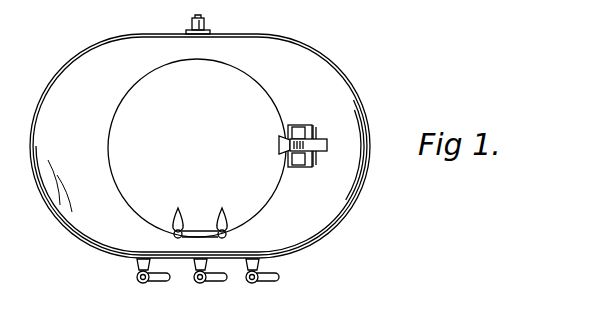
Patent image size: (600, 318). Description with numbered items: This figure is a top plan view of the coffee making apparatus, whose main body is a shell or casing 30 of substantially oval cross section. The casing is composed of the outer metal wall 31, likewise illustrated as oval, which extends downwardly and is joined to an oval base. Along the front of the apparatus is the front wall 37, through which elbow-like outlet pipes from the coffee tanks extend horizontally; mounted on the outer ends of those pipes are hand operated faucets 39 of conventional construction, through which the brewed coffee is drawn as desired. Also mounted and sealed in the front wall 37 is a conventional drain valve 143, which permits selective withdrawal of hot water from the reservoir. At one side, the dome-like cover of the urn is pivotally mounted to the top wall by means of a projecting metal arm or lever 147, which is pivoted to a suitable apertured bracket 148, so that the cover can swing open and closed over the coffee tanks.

The shell or casing 30 is at (222, 146).
The outer metal wall 31 is at (200, 146).
The front wall 37 is at (198, 284).
The hand operated faucets 39 is at (197, 289).
The drain valve 143 is at (217, 293).
The projecting metal arm or lever 147 is at (311, 165).
The apertured bracket 148 is at (320, 138).